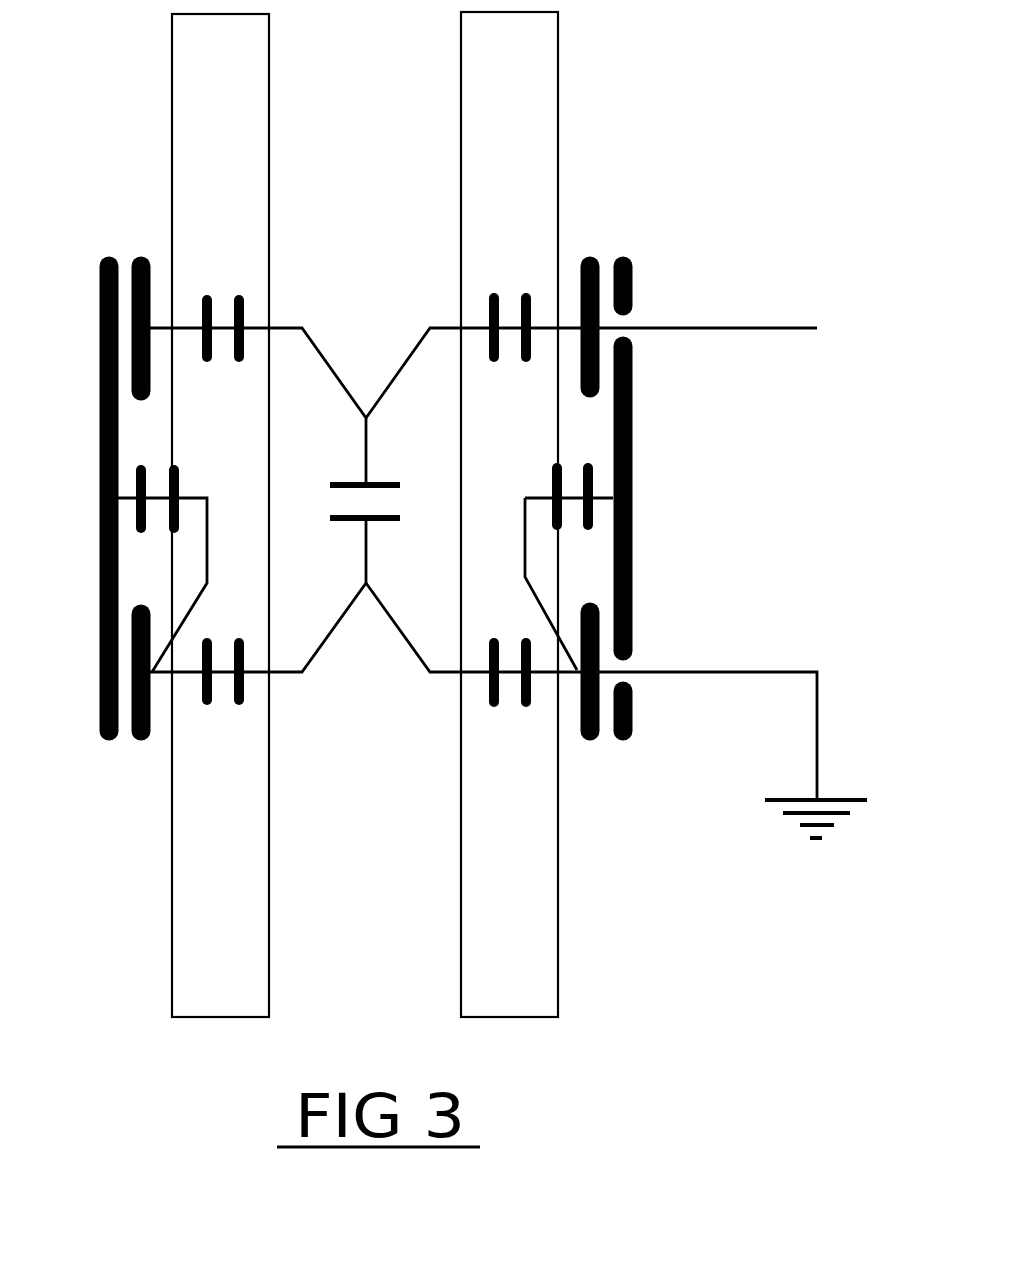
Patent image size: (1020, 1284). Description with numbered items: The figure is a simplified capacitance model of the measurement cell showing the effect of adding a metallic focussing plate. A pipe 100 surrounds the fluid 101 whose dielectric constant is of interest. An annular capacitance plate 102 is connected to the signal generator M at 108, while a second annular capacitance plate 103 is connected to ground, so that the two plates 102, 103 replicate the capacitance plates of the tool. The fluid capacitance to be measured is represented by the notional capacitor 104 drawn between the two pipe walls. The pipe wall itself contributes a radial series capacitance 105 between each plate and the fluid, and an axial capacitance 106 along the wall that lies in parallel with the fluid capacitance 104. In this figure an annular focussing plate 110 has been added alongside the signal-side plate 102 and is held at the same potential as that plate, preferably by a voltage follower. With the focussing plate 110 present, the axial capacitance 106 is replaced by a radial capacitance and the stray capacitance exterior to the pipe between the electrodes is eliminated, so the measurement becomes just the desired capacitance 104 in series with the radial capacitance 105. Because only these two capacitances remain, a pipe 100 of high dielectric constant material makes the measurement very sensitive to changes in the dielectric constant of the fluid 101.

The pipe 100 is at (543, 180).
The fluid 101 is at (398, 205).
The annular capacitance plate 102 is at (131, 257).
The annular capacitance plate 103 is at (135, 743).
The notional capacitor 104 is at (335, 500).
The radial series capacitance 105 is at (508, 290).
The axial capacitance 106 is at (572, 530).
The signal generator connection 108 is at (763, 330).
The annular focussing plate 110 is at (633, 460).